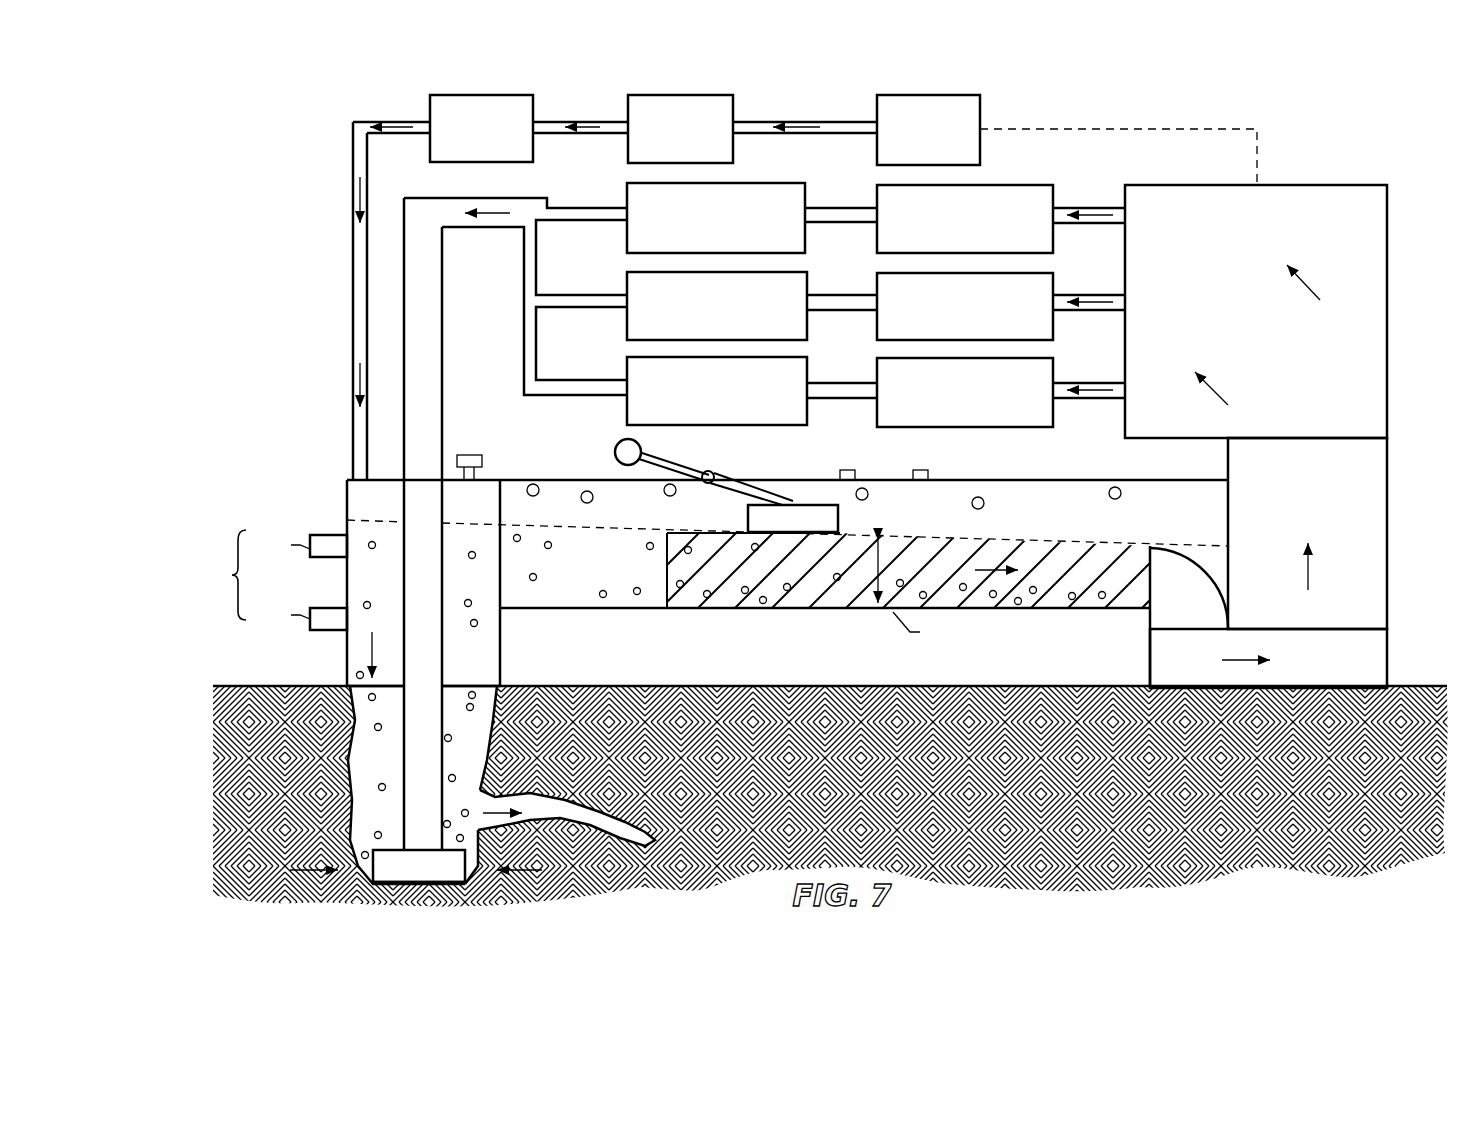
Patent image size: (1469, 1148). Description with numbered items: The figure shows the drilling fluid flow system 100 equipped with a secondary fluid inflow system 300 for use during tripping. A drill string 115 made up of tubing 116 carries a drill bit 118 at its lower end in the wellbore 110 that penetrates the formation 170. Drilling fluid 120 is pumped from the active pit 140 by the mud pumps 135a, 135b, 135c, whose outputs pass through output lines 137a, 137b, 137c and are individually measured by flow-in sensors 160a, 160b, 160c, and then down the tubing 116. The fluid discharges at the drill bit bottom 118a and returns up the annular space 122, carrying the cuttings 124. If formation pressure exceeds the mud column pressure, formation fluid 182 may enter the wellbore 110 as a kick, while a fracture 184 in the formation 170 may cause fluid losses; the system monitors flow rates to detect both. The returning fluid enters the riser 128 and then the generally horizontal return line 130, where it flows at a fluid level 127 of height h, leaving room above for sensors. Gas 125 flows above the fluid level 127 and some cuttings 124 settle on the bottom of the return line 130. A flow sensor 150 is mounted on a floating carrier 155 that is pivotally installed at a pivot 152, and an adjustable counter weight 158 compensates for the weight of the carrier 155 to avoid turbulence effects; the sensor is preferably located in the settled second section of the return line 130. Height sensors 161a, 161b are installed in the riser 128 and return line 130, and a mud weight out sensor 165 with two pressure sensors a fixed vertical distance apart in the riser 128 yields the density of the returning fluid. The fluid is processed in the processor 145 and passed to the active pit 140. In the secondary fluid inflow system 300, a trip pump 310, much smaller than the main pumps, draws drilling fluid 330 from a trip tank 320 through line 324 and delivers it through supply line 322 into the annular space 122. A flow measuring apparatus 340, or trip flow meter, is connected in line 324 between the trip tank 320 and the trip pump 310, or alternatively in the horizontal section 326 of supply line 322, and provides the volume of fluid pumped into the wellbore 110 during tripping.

The drilling fluid flow system 100 is at (1004, 159).
The wellbore 110 is at (517, 785).
The drill string 115 is at (450, 347).
The tubing 116 is at (462, 524).
The drill bit 118 is at (368, 876).
The drill bit bottom 118a is at (454, 890).
The drilling fluid 120 is at (468, 183).
The annular space 122 is at (371, 785).
The cuttings 124 is at (747, 684).
The gas 125 is at (787, 479).
The fluid level 127 is at (835, 527).
The riser 128 is at (461, 669).
The return line 130 is at (864, 617).
The mud pump 135a is at (754, 206).
The mud pump 135b is at (755, 295).
The mud pump 135c is at (754, 381).
The output line 137a is at (587, 184).
The output line 137b is at (587, 277).
The output line 137c is at (586, 367).
The active pit 140 is at (1302, 497).
The processor 145 is at (1307, 533).
The flow sensor 150 is at (786, 560).
The pivot 152 is at (747, 471).
The floating carrier 155 is at (791, 494).
The adjustable counter weight 158 is at (667, 459).
The flow-in sensor 160a is at (1002, 207).
The flow-in sensor 160b is at (1003, 296).
The flow-in sensor 160c is at (1002, 382).
The height sensor 161a is at (534, 452).
The height sensor 161b is at (925, 457).
The mud weight out sensor 165 is at (230, 572).
The formation 170 is at (830, 796).
The formation fluid 182 is at (380, 850).
The fracture 184 is at (621, 811).
The secondary fluid inflow system 300 is at (607, 111).
The trip pump 310 is at (454, 124).
The trip tank 320 is at (1067, 136).
The supply line 322 is at (330, 301).
The line 324 is at (705, 147).
The horizontal section 326 is at (391, 145).
The drilling fluid 330 is at (372, 122).
The flow measuring apparatus 340 is at (709, 125).